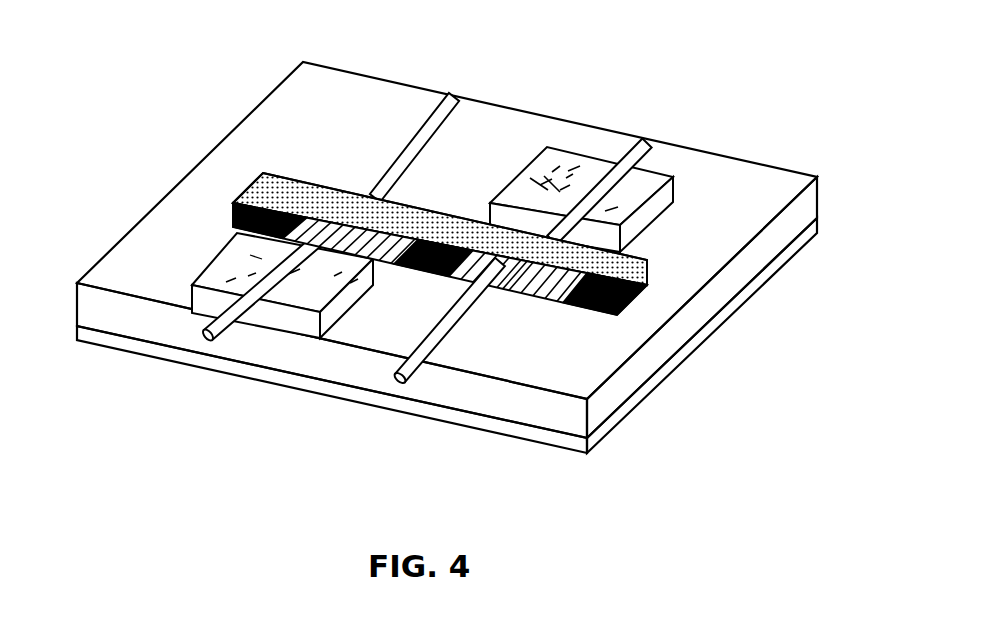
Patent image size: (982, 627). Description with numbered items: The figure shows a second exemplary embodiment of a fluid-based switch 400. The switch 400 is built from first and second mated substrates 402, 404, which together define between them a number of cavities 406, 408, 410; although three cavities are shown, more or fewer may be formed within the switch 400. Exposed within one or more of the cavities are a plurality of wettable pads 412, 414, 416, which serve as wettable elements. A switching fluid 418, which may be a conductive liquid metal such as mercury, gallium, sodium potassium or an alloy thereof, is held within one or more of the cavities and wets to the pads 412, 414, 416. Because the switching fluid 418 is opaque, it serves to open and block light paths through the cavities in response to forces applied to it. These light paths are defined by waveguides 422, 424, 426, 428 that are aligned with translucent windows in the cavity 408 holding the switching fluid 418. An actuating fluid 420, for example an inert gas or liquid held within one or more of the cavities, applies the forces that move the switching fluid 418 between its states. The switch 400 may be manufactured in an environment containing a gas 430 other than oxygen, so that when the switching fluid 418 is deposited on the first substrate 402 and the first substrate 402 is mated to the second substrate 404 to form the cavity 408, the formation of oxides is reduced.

The switch 400 is at (700, 84).
The first substrate 402 is at (160, 202).
The second substrate 404 is at (560, 444).
The cavity 406 is at (190, 298).
The cavity 408 is at (636, 303).
The cavity 410 is at (662, 218).
The wettable pad 412 is at (282, 200).
The wettable pad 414 is at (433, 277).
The wettable pad 416 is at (572, 308).
The switching fluid 418 is at (235, 205).
The actuating fluid 420 is at (242, 258).
The waveguide 422 is at (227, 335).
The waveguide 424 is at (423, 108).
The waveguide 426 is at (418, 372).
The waveguide 428 is at (620, 153).
The gas 430 is at (303, 188).